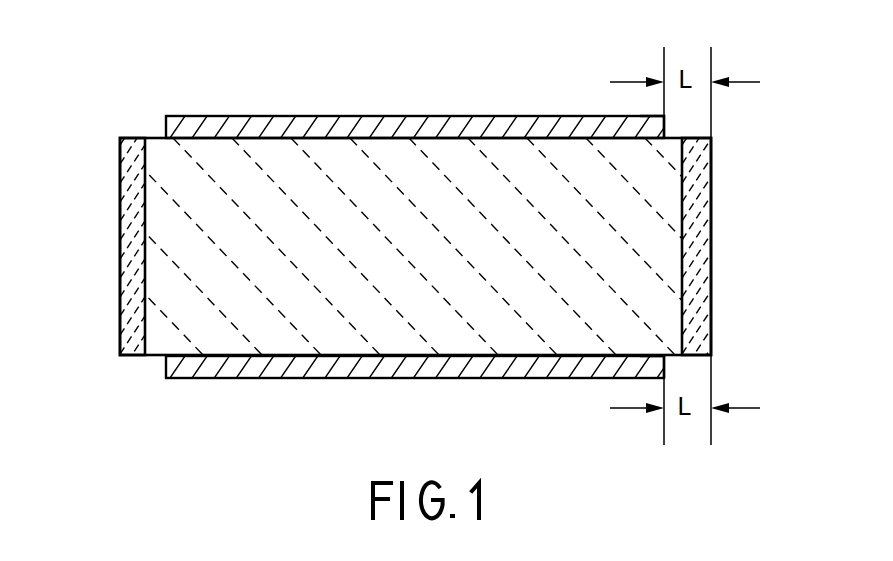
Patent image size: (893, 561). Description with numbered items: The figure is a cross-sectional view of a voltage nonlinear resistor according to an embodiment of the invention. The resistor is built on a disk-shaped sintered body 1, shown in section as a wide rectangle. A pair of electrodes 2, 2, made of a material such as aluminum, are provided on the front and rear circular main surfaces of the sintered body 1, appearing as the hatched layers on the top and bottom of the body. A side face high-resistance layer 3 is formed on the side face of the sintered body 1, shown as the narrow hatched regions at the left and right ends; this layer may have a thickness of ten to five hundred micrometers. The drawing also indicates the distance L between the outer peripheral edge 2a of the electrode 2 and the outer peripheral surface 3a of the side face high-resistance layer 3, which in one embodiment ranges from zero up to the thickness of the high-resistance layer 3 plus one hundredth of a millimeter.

The sintered body 1 is at (172, 320).
The electrode 2 is at (168, 123).
The outer peripheral edge 2a is at (660, 117).
The side face high-resistance layer 3 is at (131, 248).
The outer peripheral surface 3a is at (711, 194).